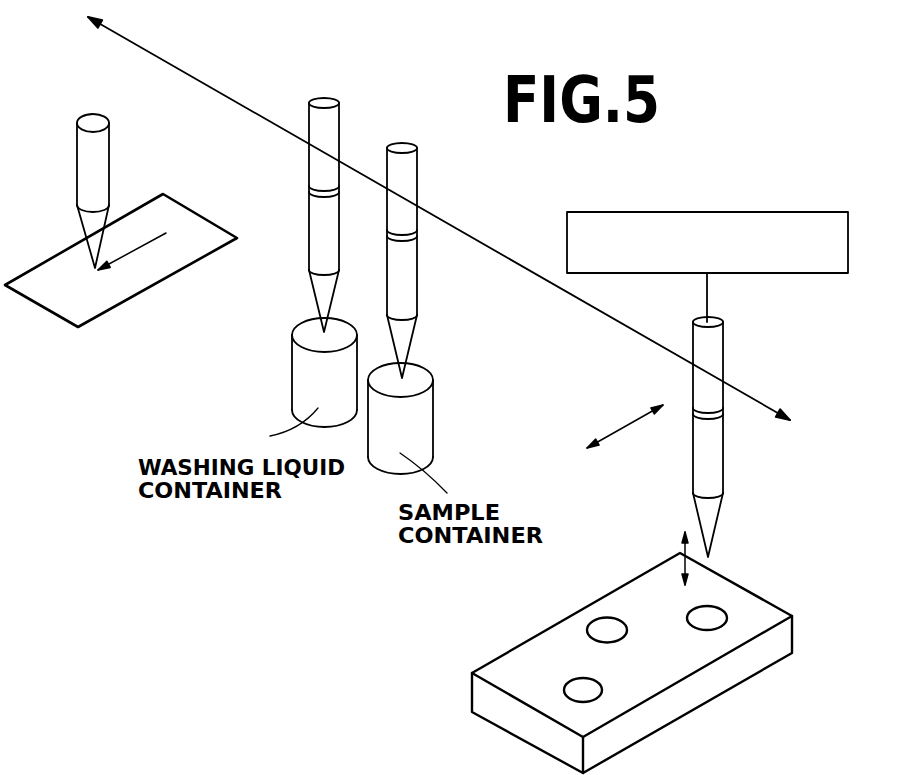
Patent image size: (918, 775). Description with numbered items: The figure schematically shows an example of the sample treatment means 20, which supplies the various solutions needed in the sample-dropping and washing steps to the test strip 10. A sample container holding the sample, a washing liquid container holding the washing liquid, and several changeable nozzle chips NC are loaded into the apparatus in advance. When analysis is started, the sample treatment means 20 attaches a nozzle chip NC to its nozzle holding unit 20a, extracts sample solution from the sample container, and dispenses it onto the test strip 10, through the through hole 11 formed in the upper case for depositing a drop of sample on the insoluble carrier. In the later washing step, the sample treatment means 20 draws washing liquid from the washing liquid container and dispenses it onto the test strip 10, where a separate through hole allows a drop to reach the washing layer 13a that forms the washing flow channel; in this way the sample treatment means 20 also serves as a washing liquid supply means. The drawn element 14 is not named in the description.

The nozzle holding unit 20a is at (336, 128).
The nozzle chip NC is at (336, 230).
The sample treatment means 20 is at (706, 212).
The test strip 10 is at (481, 697).
The washing layer 13a is at (604, 618).
The through hole 11 is at (727, 620).
The hole (well) 14 is at (605, 685).